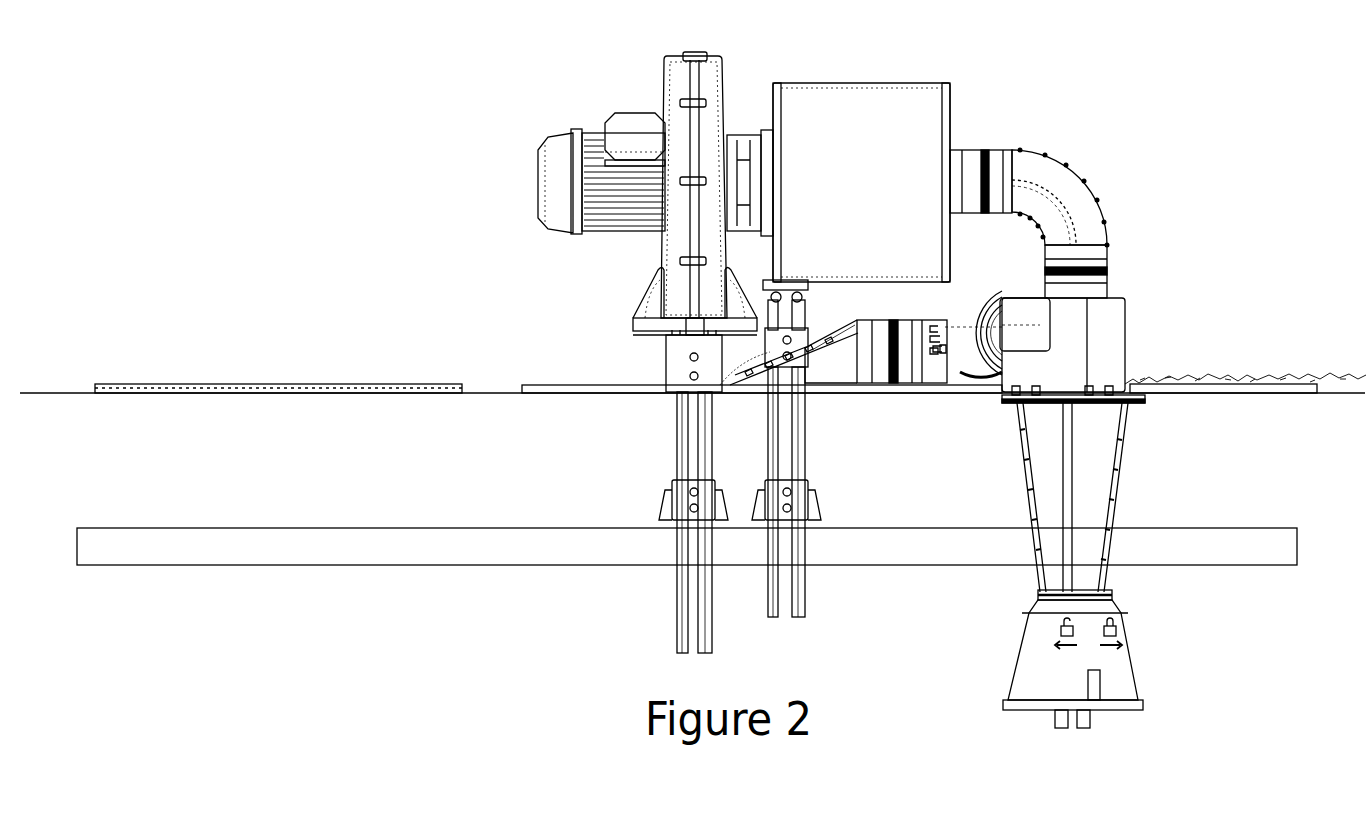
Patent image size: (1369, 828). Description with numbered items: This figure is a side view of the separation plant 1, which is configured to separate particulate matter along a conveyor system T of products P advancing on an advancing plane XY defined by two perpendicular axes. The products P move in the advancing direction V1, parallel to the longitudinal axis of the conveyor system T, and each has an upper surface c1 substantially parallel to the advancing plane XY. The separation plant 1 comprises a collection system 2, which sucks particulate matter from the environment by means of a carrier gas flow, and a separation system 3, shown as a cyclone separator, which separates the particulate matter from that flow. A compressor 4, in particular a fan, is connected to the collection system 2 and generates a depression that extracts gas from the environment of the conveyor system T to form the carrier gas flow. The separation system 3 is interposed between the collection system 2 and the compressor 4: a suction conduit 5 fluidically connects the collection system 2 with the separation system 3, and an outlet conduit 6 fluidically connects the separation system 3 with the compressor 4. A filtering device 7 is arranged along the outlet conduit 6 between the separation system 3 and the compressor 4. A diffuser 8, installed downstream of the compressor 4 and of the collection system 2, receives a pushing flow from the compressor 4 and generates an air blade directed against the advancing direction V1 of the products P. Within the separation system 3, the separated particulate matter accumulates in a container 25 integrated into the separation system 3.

The separation plant 1 is at (303, 158).
The collection system 2 is at (836, 403).
The separation system 3 is at (1098, 452).
The compressor 4 is at (678, 48).
The suction conduit 5 is at (987, 372).
The outlet conduit 6 is at (1084, 176).
The filtering device 7 is at (850, 112).
The diffuser 8 is at (628, 297).
The container 25 is at (1124, 660).
The products P is at (183, 384).
The upper surface c1 is at (316, 380).
The conveyor system T is at (1337, 384).
The advancing plane XY is at (1349, 395).
The advancing direction V1 is at (340, 417).